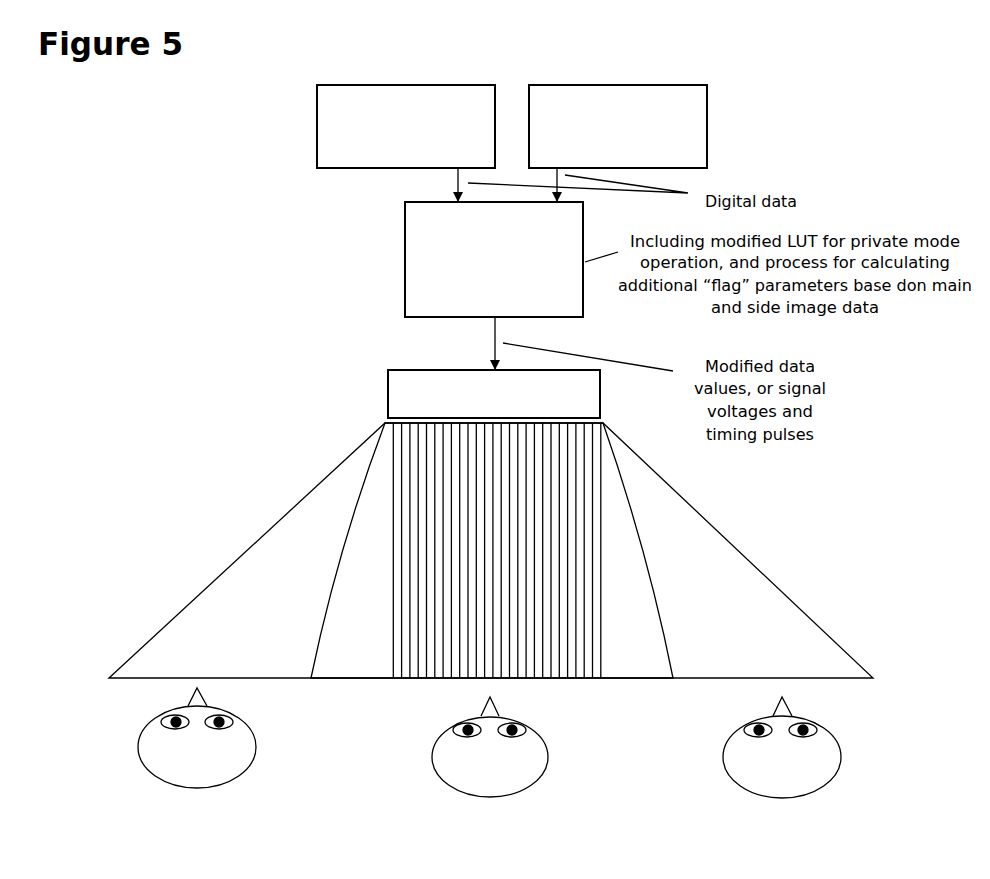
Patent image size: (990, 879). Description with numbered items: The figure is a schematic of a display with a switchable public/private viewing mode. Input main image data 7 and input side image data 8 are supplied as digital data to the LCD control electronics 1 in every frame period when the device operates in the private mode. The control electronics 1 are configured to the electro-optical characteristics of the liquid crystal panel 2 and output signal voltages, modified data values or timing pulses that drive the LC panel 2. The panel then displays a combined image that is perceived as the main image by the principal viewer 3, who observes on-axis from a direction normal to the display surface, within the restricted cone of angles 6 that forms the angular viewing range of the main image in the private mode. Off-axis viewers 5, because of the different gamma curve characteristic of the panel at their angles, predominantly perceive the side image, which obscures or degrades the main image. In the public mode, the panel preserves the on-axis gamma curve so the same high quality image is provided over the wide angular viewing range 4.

The LCD control electronics 1 is at (397, 254).
The liquid crystal panel 2 is at (378, 388).
The principal viewer 3 is at (443, 725).
The angular viewing range of the main image in the public mode 4 is at (232, 567).
The off-axis viewer 5 is at (132, 743).
The angular viewing range of the main image in the private mode 6 is at (358, 512).
The input main image data 7 is at (316, 138).
The input side image data 8 is at (708, 123).